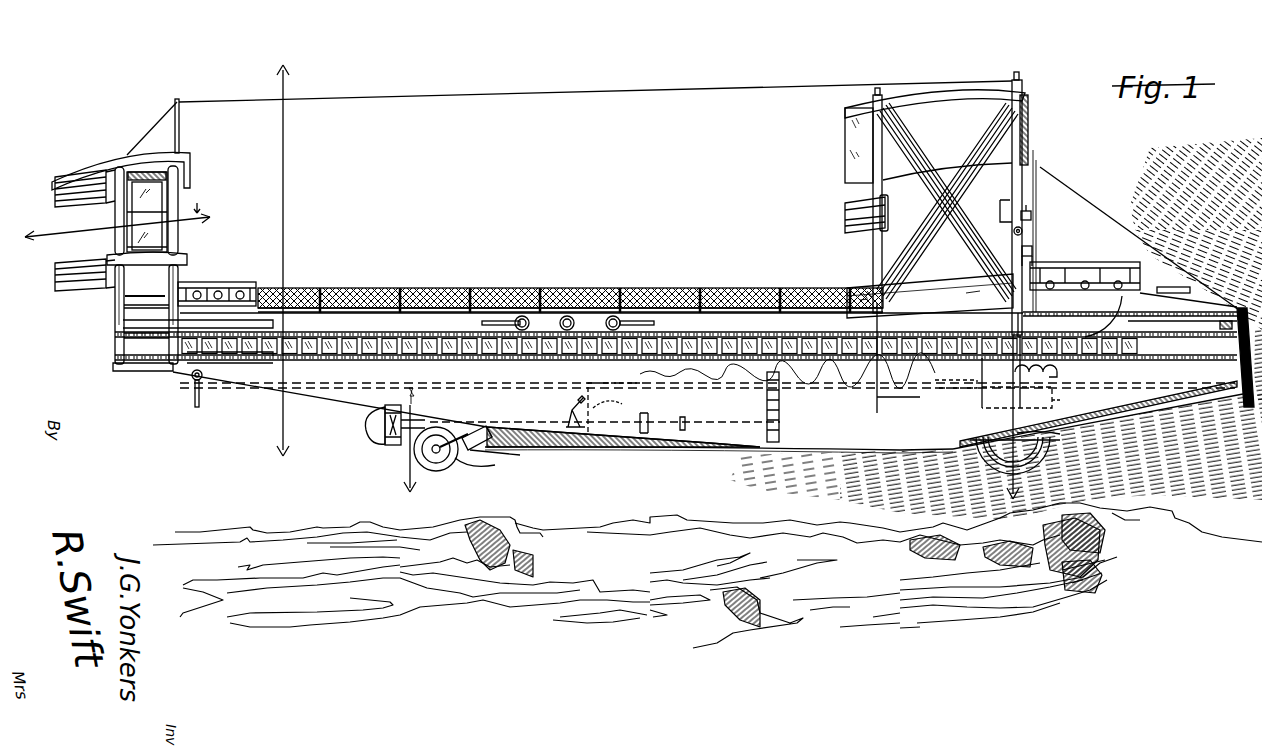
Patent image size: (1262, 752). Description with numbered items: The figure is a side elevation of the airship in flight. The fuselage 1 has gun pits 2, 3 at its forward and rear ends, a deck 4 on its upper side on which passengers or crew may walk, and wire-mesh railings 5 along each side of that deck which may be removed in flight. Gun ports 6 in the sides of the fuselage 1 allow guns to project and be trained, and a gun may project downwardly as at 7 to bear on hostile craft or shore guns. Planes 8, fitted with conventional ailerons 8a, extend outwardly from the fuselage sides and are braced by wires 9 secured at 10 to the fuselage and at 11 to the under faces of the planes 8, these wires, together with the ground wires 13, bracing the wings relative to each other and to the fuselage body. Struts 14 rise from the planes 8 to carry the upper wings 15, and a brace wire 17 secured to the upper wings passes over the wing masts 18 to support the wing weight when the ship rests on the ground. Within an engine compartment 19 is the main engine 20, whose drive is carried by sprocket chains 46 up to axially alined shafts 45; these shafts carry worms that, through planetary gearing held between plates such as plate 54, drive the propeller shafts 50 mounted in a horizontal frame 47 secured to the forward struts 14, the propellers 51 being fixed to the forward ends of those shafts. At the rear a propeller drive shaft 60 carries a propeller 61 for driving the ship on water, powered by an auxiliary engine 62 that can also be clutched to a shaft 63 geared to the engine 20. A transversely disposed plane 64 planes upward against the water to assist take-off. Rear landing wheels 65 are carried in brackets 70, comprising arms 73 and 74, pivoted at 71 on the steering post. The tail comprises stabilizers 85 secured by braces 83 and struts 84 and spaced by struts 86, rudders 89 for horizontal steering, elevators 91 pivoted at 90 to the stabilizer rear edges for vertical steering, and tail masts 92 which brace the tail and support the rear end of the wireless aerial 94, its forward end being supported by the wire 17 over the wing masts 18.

The fuselage 1 is at (684, 370).
The gun pit 2 is at (1094, 270).
The gun pit 3 is at (222, 292).
The deck 4 is at (706, 307).
The railings 5 is at (470, 288).
The gun ports 6 is at (524, 316).
The downwardly projecting gun 7 is at (323, 57).
The planes 8 is at (710, 395).
The ailerons 8a is at (846, 213).
The wires 9 is at (977, 398).
The securing point 10 is at (1016, 414).
The securing point 11 is at (927, 296).
The ground wires 13 is at (118, 224).
The struts 14 is at (868, 156).
The upper wings 15 is at (947, 202).
The brace wire 17 is at (1026, 142).
The wing masts 18 is at (1020, 84).
The engine compartment 19 is at (1060, 396).
The engine 20 is at (1066, 377).
The axially alined shafts 45 is at (1014, 230).
The sprocket chains 46 is at (1034, 252).
The horizontal frame 47 is at (998, 201).
The propeller shafts 50 is at (1034, 216).
The propellers 51 is at (1043, 192).
The plate 54 is at (1040, 463).
The propeller drive shaft 60 is at (430, 428).
The propeller 61 is at (394, 418).
The engine 62 is at (588, 386).
The shaft 63 is at (706, 420).
The transversely disposed plane 64 is at (980, 460).
The rear landing wheels 65 is at (447, 466).
The brackets 70 is at (470, 458).
The pivotal point 71 is at (492, 428).
The arm 73 is at (472, 426).
The arm 74 is at (492, 448).
The braces 83 is at (190, 378).
The struts 84 is at (175, 348).
The stabilizers 85 is at (190, 156).
The struts 86 is at (178, 236).
The rudders 89 is at (133, 202).
The pivotal connection 90 is at (100, 170).
The elevators 91 is at (70, 178).
The tail masts 92 is at (180, 142).
The aerial 94 is at (720, 88).